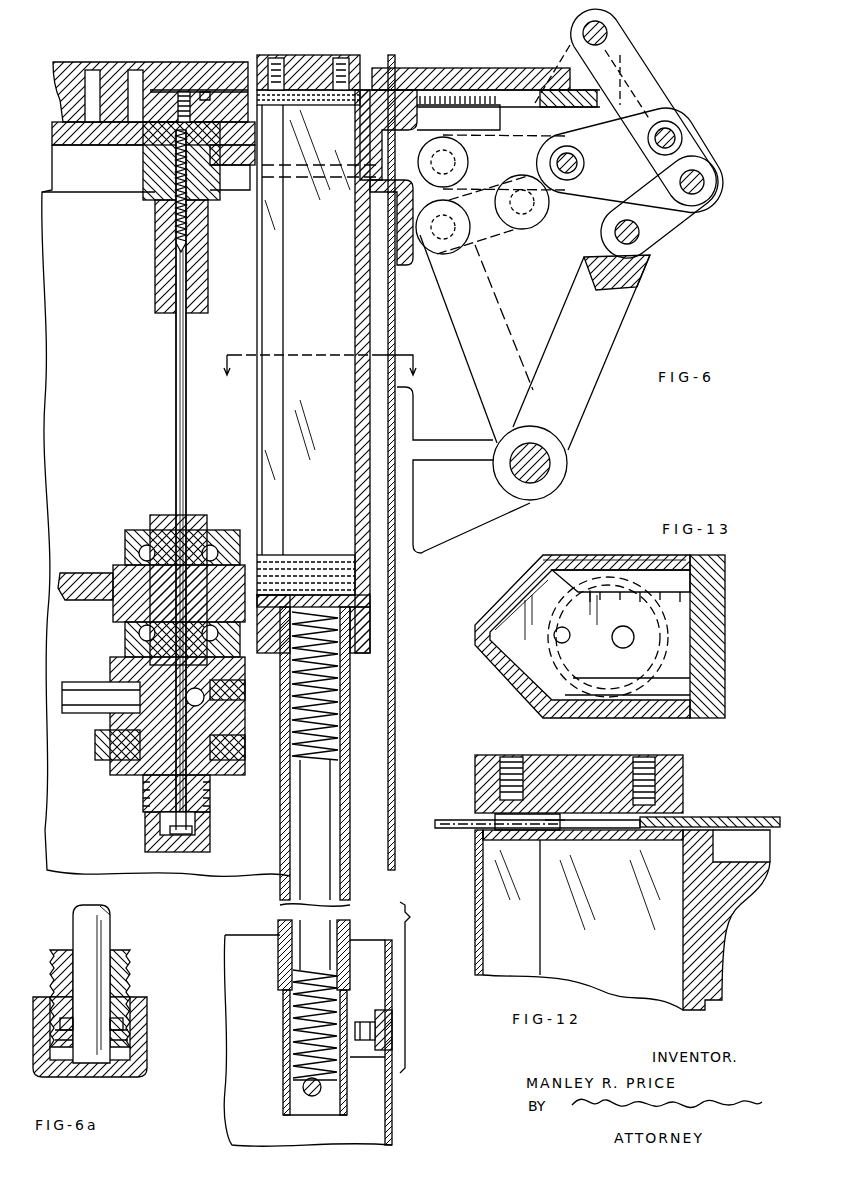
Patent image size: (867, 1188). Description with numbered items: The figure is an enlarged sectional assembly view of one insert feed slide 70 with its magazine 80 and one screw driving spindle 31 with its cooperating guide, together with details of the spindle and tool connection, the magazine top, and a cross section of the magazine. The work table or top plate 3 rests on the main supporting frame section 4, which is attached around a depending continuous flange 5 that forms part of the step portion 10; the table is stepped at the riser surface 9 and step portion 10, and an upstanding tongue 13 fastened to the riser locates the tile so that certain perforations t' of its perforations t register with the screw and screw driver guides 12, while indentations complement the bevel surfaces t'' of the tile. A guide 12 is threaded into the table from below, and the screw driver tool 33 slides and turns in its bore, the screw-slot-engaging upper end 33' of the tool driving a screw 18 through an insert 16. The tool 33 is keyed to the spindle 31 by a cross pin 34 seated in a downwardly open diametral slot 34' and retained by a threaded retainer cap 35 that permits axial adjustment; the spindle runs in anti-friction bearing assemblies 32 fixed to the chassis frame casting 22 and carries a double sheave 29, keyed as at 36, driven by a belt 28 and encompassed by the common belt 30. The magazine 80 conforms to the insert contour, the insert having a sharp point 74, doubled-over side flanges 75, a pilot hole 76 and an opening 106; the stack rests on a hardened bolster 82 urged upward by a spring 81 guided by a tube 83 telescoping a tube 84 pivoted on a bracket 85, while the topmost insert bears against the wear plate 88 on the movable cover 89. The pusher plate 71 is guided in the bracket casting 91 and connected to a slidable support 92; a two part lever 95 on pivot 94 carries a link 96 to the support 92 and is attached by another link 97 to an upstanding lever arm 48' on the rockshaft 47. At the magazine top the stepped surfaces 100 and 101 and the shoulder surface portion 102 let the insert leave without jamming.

In FIG. 6, the work table or top plate 3 is at (52, 137).
In FIG. 6, the main supporting frame section 4 is at (104, 384).
In FIG. 6, the depending continuous flange 5 is at (407, 258).
In FIG. 6, the step riser surface 9 is at (262, 135).
In FIG. 6, the step portion 10 is at (388, 170).
In FIG. 6, the screw and screw driver guide 12 is at (160, 260).
In FIG. 6, the upstanding tongue 13 is at (318, 359).
In FIG. 6, the screw holding insert 16 is at (160, 88).
In FIG. 13, the screw holding insert 16 is at (690, 612).
In FIG. 12, the screw holding insert 16 is at (480, 820).
In FIG. 6, the screw 18 is at (175, 207).
In FIG. 6, the chassis frame casting 22 is at (102, 590).
In FIG. 6, the belt 28 is at (100, 755).
In FIG. 6, the double sheave 29 is at (230, 710).
In FIG. 6, the belt 30 is at (100, 684).
In FIG. 6, the spindle 31 is at (165, 535).
In FIG. 6A, the spindle 31 is at (128, 966).
In FIG. 6, the anti-friction bearing assembly 32 is at (140, 555).
In FIG. 6, the screw driver tool 33 is at (156, 480).
In FIG. 6A, the screw driver tool 33 is at (108, 984).
In FIG. 6, the screw-slot-engaging upper end 33' is at (205, 240).
In FIG. 6, the cross pin 34 is at (145, 830).
In FIG. 6A, the cross pin 34 is at (118, 1035).
In FIG. 6A, the diametral slot 34' is at (122, 1017).
In FIG. 6, the threaded retainer cap 35 is at (205, 832).
In FIG. 6A, the threaded retainer cap 35 is at (148, 1068).
In FIG. 6, the key 36 is at (200, 690).
In FIG. 6, the rockshaft 47 is at (550, 468).
In FIG. 6, the upstanding lever arm 48' is at (545, 342).
In FIG. 6, the feed slide 70 is at (460, 54).
In FIG. 6, the pusher or feed plate 71 is at (400, 68).
In FIG. 12, the pusher or feed plate 71 is at (700, 817).
In FIG. 13, the point 74 is at (497, 625).
In FIG. 12, the point 74 is at (470, 835).
In FIG. 13, the side flange 75 is at (615, 596).
In FIG. 12, the side flange 75 is at (600, 842).
In FIG. 6, the pilot hole 76 is at (190, 90).
In FIG. 13, the pilot hole 76 is at (567, 642).
In FIG. 12, the pilot hole 76 is at (562, 842).
In FIG. 6, the magazine 80 is at (247, 261).
In FIG. 13, the magazine 80 is at (580, 560).
In FIG. 12, the magazine 80 is at (464, 921).
In FIG. 6, the spring 81 is at (320, 688).
In FIG. 6, the bolster 82 is at (360, 600).
In FIG. 6, the spring guiding tube 83 is at (350, 700).
In FIG. 13, the spring guiding tube 83 is at (503, 675).
In FIG. 6, the tube 84 is at (348, 1012).
In FIG. 6, the bracket 85 is at (362, 1110).
In FIG. 6, the wear plate 88 is at (278, 58).
In FIG. 12, the wear plate 88 is at (683, 772).
In FIG. 6, the cover 89 is at (315, 56).
In FIG. 12, the pusher plate guide bracket casting 91 is at (725, 920).
In FIG. 6, the support 92 is at (605, 125).
In FIG. 6, the pivot 94 is at (607, 33).
In FIG. 6, the two part lever 95 is at (652, 92).
In FIG. 6, the link 96 is at (630, 168).
In FIG. 6, the link 97 is at (490, 235).
In FIG. 12, the step surface 100 is at (505, 812).
In FIG. 12, the step 101 is at (552, 812).
In FIG. 12, the shoulder surface portion 102 is at (492, 842).
In FIG. 6, the opening 106 is at (205, 93).
In FIG. 13, the opening 106 is at (634, 648).
In FIG. 12, the opening 106 is at (625, 845).
In FIG. 6, the perforation t is at (150, 78).
In FIG. 6, the perforation t' is at (97, 156).
In FIG. 6, the bevel surface t'' is at (282, 117).